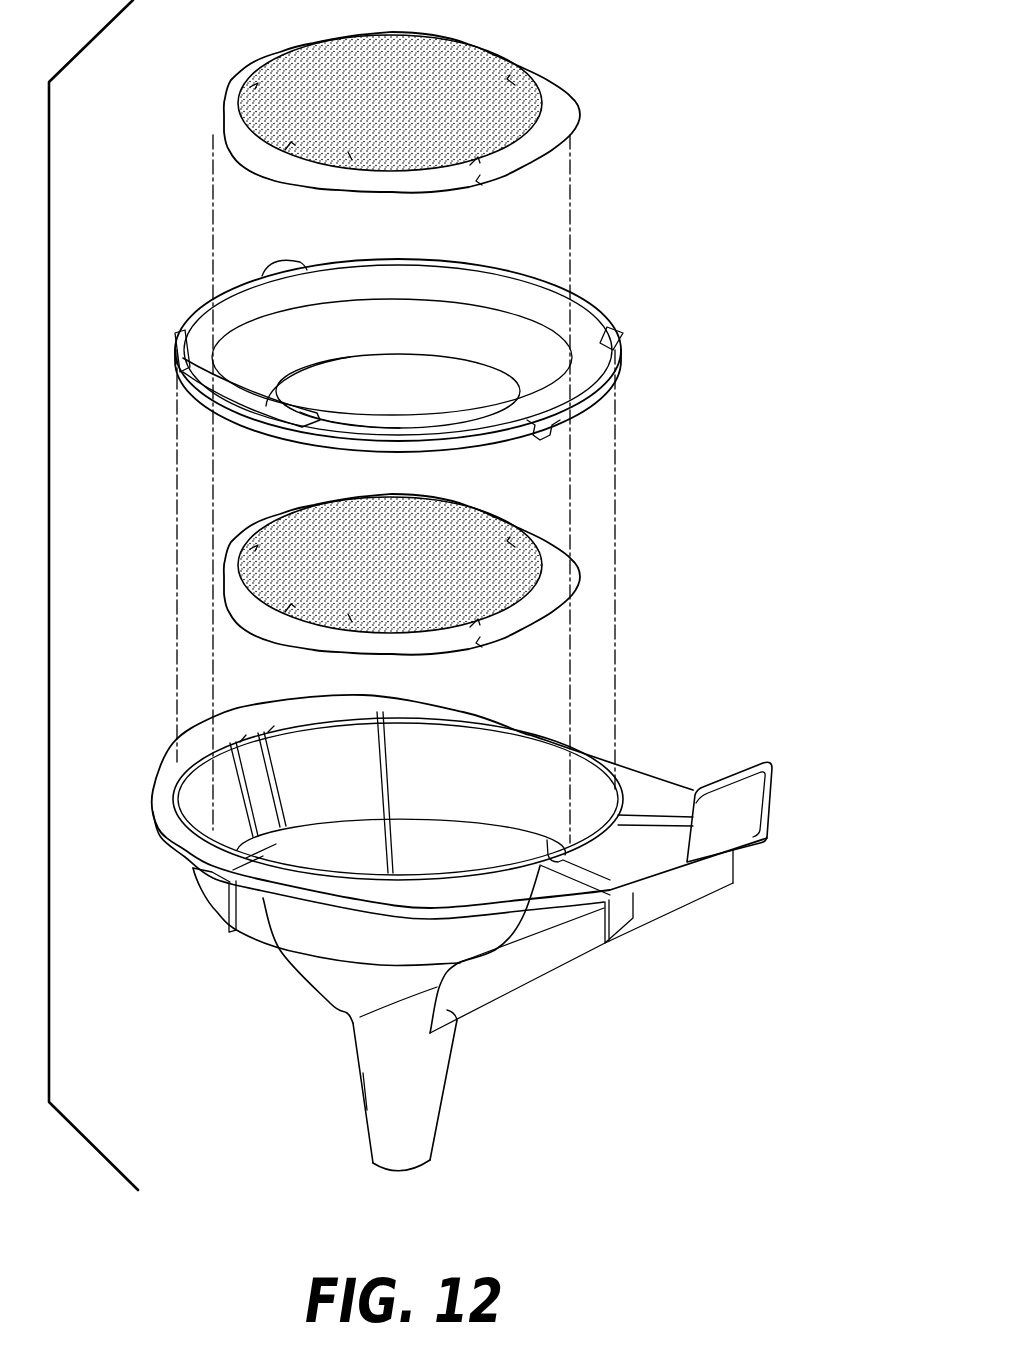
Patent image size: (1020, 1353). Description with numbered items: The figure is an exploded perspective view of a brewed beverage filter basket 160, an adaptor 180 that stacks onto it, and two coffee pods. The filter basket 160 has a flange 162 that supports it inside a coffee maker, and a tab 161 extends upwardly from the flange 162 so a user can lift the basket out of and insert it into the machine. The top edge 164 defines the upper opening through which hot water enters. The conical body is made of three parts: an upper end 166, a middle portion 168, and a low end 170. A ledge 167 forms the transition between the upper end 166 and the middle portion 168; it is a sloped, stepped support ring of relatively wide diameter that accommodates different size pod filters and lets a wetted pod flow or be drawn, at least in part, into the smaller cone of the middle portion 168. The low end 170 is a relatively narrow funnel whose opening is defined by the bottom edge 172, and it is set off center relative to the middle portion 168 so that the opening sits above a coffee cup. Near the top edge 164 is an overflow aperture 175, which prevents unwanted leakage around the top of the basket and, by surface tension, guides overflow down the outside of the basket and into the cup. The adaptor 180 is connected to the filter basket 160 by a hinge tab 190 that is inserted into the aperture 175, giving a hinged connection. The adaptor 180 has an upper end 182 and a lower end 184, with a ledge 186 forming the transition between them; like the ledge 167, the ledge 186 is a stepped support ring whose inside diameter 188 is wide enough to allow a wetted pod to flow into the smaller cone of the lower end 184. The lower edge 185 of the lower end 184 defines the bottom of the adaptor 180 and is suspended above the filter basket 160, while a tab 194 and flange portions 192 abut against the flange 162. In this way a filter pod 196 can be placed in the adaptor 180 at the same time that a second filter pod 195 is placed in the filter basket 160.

The filter basket 160 is at (495, 940).
The tab 161 is at (757, 802).
The flange 162 is at (410, 708).
The top edge 164 is at (308, 718).
The upper end 166 is at (534, 758).
The ledge 167 is at (297, 838).
The middle portion 168 is at (336, 1000).
The low end 170 is at (424, 1081).
The bottom edge 172 is at (426, 1170).
The overflow aperture 175 is at (555, 862).
The adaptor 180 is at (422, 342).
The upper end 182 is at (400, 274).
The lower end 184 is at (442, 374).
The lower edge 185 is at (342, 388).
The ledge 186 is at (443, 316).
The inside diameter 188 is at (270, 398).
The hinge tab 190 is at (548, 437).
The flange portions 192 is at (172, 370).
The tab 194 is at (284, 258).
The second filter pod 195 is at (411, 574).
The filter pod 196 is at (472, 62).